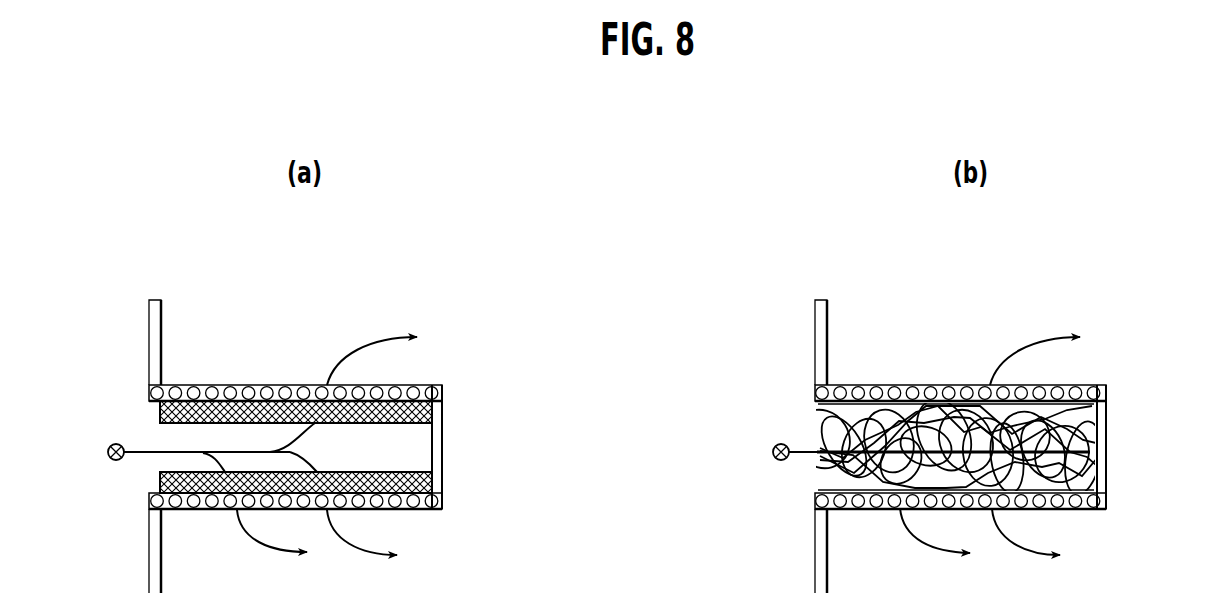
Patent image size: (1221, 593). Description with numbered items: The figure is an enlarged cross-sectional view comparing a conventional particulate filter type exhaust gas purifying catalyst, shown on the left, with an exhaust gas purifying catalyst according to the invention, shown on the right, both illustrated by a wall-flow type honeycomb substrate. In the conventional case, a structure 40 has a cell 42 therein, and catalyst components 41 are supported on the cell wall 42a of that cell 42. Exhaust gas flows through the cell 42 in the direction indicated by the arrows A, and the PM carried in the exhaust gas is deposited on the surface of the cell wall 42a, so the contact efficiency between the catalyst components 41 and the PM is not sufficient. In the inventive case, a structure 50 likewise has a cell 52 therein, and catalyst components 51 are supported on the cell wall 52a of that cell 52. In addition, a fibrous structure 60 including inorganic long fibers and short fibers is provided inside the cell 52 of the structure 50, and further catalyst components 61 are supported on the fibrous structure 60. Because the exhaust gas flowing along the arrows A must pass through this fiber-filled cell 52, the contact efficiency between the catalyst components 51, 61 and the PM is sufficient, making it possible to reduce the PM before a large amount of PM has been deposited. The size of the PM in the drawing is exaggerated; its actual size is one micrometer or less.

The structure 40 is at (153, 298).
The catalyst components 41 is at (265, 392).
The cell 42 is at (413, 448).
The cell wall 42a is at (432, 480).
The particulate matter PM is at (116, 444).
The arrows indicating flow of exhaust gas A is at (140, 460).
The structure 50 is at (819, 300).
The catalyst components 51 is at (893, 392).
The cell 52 is at (1088, 485).
The cell wall 52a is at (1083, 510).
The fibrous structure 60 is at (1093, 410).
The catalyst components 61 is at (1063, 400).